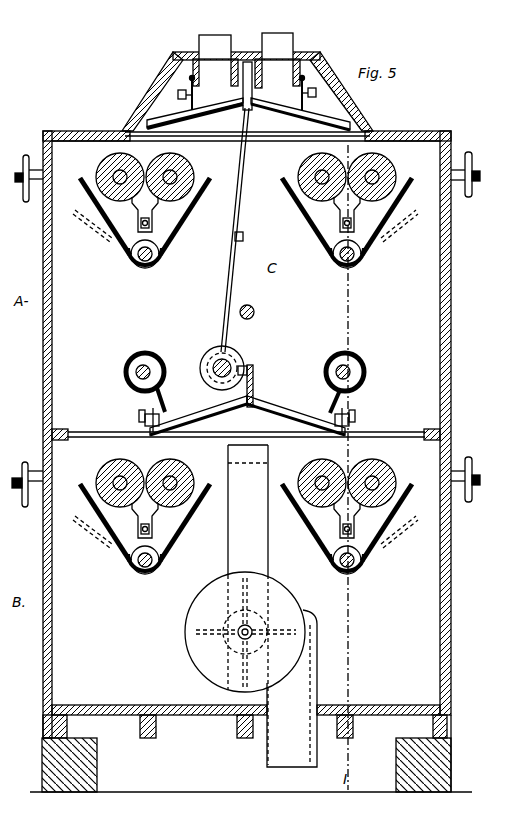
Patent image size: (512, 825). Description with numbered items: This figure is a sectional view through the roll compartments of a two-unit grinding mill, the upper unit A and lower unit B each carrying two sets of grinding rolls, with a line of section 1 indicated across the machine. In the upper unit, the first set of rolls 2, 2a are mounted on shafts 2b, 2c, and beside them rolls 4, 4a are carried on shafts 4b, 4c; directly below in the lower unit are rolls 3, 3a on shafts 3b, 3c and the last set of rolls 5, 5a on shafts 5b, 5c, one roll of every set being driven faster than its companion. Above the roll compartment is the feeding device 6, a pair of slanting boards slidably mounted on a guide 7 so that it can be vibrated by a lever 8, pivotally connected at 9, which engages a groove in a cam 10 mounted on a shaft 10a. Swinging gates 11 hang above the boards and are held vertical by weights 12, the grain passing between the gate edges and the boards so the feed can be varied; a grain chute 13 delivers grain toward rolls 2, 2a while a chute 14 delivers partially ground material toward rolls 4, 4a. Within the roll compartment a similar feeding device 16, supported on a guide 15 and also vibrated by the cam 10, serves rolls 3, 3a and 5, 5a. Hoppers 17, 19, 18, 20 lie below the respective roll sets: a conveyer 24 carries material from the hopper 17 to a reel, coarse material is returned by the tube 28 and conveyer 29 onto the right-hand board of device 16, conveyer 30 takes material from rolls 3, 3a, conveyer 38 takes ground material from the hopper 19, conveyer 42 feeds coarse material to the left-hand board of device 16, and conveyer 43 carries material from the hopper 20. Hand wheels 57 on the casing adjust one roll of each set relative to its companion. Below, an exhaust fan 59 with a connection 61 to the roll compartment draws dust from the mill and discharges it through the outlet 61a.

The hopper 1 is at (262, 46).
The roll 2 is at (318, 170).
The roll 2a is at (380, 170).
The shaft 2b is at (312, 176).
The shaft 2c is at (395, 178).
The roll 3 is at (318, 465).
The roll 3a is at (374, 464).
The shaft 3b is at (312, 473).
The shaft 3c is at (390, 472).
The roll 4 is at (116, 172).
The roll 4a is at (176, 172).
The shaft 4b is at (102, 184).
The shaft 4c is at (186, 178).
The roll 5 is at (118, 466).
The roll 5a is at (172, 465).
The shaft 5b is at (105, 474).
The shaft 5c is at (187, 472).
The feeding device 6 is at (248, 114).
The guide 7 is at (252, 112).
The lever 8 is at (240, 213).
The pivot 9 is at (243, 237).
The cam 10 is at (230, 356).
The shaft 10a is at (251, 366).
The swinging gate 11 is at (247, 92).
The weight 12 is at (178, 96).
The grain chute 13 is at (277, 60).
The chute 14 is at (215, 60).
The guide 15 is at (290, 415).
The feeding device 16 is at (198, 415).
The hopper 17 is at (318, 236).
The hopper 18 is at (316, 534).
The hopper 19 is at (176, 236).
The hopper 20 is at (178, 538).
The conveyer 24 is at (360, 264).
The tube 28 is at (366, 374).
The conveyer 29 is at (364, 366).
The conveyer 30 is at (358, 570).
The conveyer 38 is at (145, 270).
The conveyer 42 is at (127, 385).
The conveyer 43 is at (144, 576).
The hand wheel 57 is at (472, 162).
The exhaust fan 59 is at (192, 645).
The connection 61 is at (248, 605).
The outlet 61a is at (296, 762).